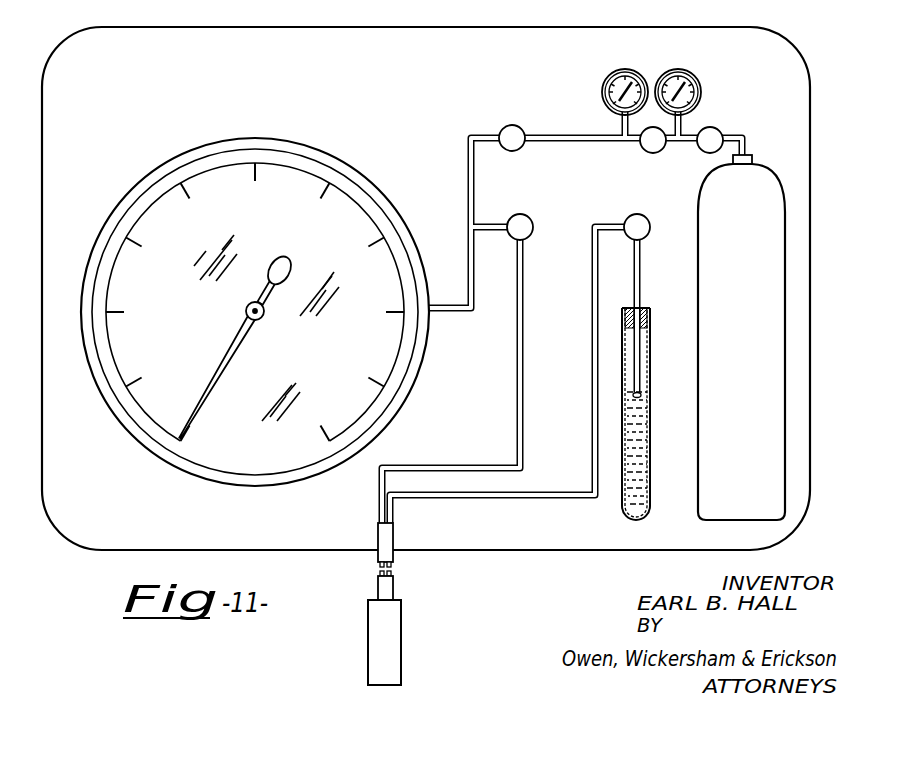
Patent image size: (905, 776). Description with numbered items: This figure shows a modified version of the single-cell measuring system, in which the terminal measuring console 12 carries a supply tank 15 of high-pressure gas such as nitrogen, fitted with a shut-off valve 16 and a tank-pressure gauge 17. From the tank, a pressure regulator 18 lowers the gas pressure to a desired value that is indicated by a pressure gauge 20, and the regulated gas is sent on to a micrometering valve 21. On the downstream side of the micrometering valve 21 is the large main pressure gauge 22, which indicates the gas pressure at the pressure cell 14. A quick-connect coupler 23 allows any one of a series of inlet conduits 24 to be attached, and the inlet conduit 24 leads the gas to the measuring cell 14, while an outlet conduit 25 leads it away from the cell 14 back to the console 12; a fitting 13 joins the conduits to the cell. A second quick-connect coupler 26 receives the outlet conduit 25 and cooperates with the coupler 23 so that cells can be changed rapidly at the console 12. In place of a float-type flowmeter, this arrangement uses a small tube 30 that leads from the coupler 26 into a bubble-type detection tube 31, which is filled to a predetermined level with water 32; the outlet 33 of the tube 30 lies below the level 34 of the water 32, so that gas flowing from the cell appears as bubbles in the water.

The terminal measuring console 12 is at (789, 44).
The coupling fitting 13 is at (378, 580).
The pressure cell 14 is at (401, 648).
The supply tank 15 is at (752, 321).
The shut-off valve 16 is at (720, 131).
The tank-pressure gauge 17 is at (695, 80).
The pressure regulator 18 is at (657, 152).
The pressure gauge 20 is at (609, 76).
The micrometering valve 21 is at (523, 131).
The main pressure gauge 22 is at (402, 213).
The quick-connect coupler 23 is at (530, 236).
The inlet conduit 24 is at (524, 384).
The outlet conduit 25 is at (592, 308).
The second quick-connect coupler 26 is at (650, 229).
The small tube 30 is at (641, 290).
The bubble-type detection tube 31 is at (648, 455).
The water 32 is at (638, 428).
The outlet 33 is at (641, 396).
The level 34 is at (641, 378).